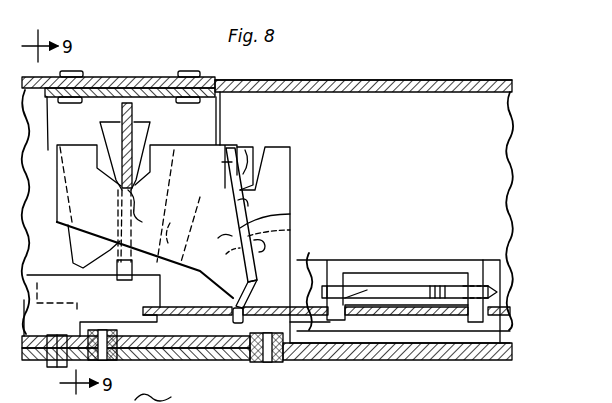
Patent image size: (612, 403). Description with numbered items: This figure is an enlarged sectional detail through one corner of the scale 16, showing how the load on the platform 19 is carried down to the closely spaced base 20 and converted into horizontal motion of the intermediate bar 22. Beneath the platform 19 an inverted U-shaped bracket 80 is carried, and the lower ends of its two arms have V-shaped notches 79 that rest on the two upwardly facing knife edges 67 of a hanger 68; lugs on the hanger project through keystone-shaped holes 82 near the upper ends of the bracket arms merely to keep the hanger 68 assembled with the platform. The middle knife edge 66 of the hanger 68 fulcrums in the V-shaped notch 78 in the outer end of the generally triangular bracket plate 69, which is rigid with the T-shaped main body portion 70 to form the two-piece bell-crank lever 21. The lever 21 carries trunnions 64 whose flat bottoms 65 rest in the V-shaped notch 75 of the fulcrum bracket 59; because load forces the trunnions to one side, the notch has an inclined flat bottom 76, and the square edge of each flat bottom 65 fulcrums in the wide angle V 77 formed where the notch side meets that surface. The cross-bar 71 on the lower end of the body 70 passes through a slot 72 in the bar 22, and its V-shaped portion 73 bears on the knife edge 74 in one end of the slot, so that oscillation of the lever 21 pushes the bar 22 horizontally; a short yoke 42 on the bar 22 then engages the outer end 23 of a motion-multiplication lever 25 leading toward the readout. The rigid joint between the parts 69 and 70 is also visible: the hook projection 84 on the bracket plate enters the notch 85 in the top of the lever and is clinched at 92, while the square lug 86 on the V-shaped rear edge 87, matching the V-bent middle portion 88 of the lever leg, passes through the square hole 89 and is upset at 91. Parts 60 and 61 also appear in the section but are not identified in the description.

The scale 16 is at (371, 79).
The platform 19 is at (308, 81).
The base 20 is at (336, 351).
The bell-crank lever 21 is at (288, 216).
The intermediate bar 22 is at (145, 306).
The outer end of motion-multiplication lever 23 is at (377, 290).
The motion-multiplication lever 25 is at (437, 288).
The yoke 42 is at (423, 286).
The fulcrum bracket 59 is at (288, 189).
The bolt 60 is at (270, 359).
The guide block 61 is at (271, 148).
The trunnion 64 is at (224, 162).
The flat bottom of trunnion 65 is at (222, 186).
The middle knife edge 66 is at (121, 187).
The knife edge 67 is at (118, 270).
The hanger 68 is at (129, 103).
The bracket plate 69 is at (57, 222).
The T-shaped main body portion 70 is at (244, 204).
The cross-bar 71 is at (234, 322).
The slot 72 is at (202, 304).
The V-shaped portion 73 is at (223, 276).
The knife edge 74 is at (260, 300).
The V-shaped notch 75 is at (290, 164).
The inclined flat bottom 76 is at (234, 235).
The wide angle V 77 is at (178, 233).
The V-shaped notch 78 is at (142, 215).
The V-shaped notch 79 is at (119, 249).
The inverted U-shaped bracket 80 is at (56, 126).
The keystone-shaped hole 82 is at (104, 130).
The hook projection 84 is at (240, 141).
The notch 85 is at (213, 128).
The square lug 86 is at (217, 257).
The V-shaped rear edge 87 is at (214, 241).
The V-bent middle portion 88 is at (258, 253).
The square hole 89 is at (290, 241).
The upset end of lug 91 is at (294, 232).
The clinched hook 92 is at (253, 148).